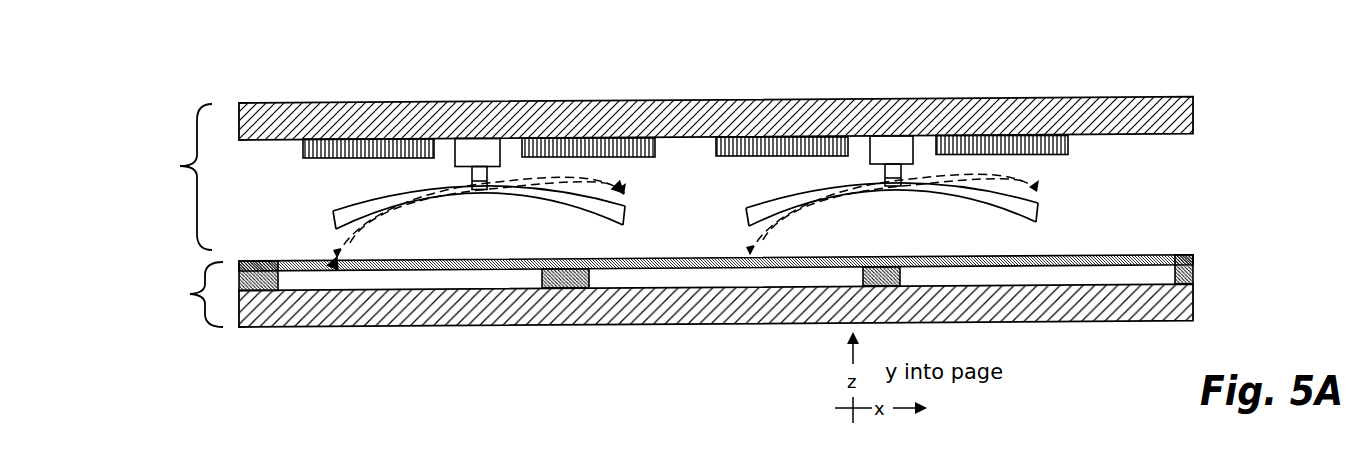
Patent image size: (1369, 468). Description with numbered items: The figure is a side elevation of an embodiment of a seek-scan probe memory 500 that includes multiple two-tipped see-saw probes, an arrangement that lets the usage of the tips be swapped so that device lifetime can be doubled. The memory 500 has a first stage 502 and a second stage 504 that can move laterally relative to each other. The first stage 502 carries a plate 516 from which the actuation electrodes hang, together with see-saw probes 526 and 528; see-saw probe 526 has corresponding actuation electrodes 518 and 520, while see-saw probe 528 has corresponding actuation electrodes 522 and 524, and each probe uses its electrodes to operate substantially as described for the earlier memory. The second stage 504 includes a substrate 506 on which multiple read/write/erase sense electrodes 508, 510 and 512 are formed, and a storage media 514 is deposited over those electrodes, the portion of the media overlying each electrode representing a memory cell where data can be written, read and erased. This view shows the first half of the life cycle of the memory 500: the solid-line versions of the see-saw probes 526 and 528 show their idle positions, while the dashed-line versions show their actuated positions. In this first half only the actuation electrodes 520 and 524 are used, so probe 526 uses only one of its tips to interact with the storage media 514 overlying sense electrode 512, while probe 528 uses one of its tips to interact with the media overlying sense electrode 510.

The SSP memory 500 is at (228, 82).
The first stage 502 is at (172, 177).
The second stage 504 is at (178, 294).
The substrate 506 is at (1188, 302).
The R/W/E sense electrode 508 is at (1162, 273).
The R/W/E sense electrode 510 is at (622, 282).
The R/W/E sense electrode 512 is at (310, 284).
The storage media 514 is at (1190, 256).
The top plate 516 is at (1193, 112).
The actuation electrode 518 is at (330, 150).
The actuation electrode 520 is at (593, 150).
The actuation electrode 522 is at (762, 146).
The actuation electrode 524 is at (1068, 156).
The see-saw probe 526 is at (557, 196).
The see-saw probe 528 is at (993, 193).